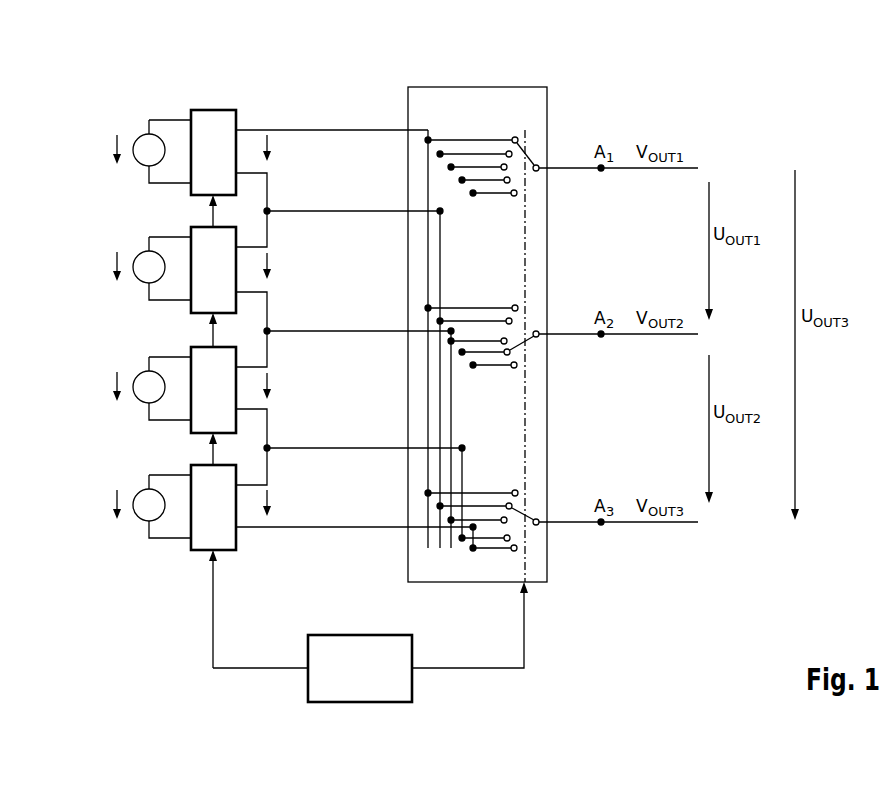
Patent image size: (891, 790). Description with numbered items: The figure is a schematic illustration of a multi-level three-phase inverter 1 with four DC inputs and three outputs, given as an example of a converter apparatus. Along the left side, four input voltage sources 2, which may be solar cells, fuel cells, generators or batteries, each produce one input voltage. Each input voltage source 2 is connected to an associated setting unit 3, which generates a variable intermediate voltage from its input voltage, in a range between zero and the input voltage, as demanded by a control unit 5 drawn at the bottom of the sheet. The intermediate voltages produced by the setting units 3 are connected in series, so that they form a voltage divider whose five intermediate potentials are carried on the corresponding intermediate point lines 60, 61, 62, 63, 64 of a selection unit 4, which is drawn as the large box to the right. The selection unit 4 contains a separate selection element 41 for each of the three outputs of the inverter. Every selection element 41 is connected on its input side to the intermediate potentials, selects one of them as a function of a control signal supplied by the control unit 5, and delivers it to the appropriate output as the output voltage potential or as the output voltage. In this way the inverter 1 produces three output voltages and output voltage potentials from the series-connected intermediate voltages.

The multi-level three-phase inverter 1 is at (780, 114).
The input voltage source 2 is at (140, 138).
The setting unit 3 is at (215, 110).
The selection unit 4 is at (407, 102).
The selection element 41 is at (538, 160).
The control unit 5 is at (343, 635).
The intermediate point line 64 is at (333, 130).
The intermediate point line 63 is at (333, 211).
The intermediate point line 62 is at (333, 331).
The intermediate point line 61 is at (333, 448).
The intermediate point line 60 is at (333, 527).